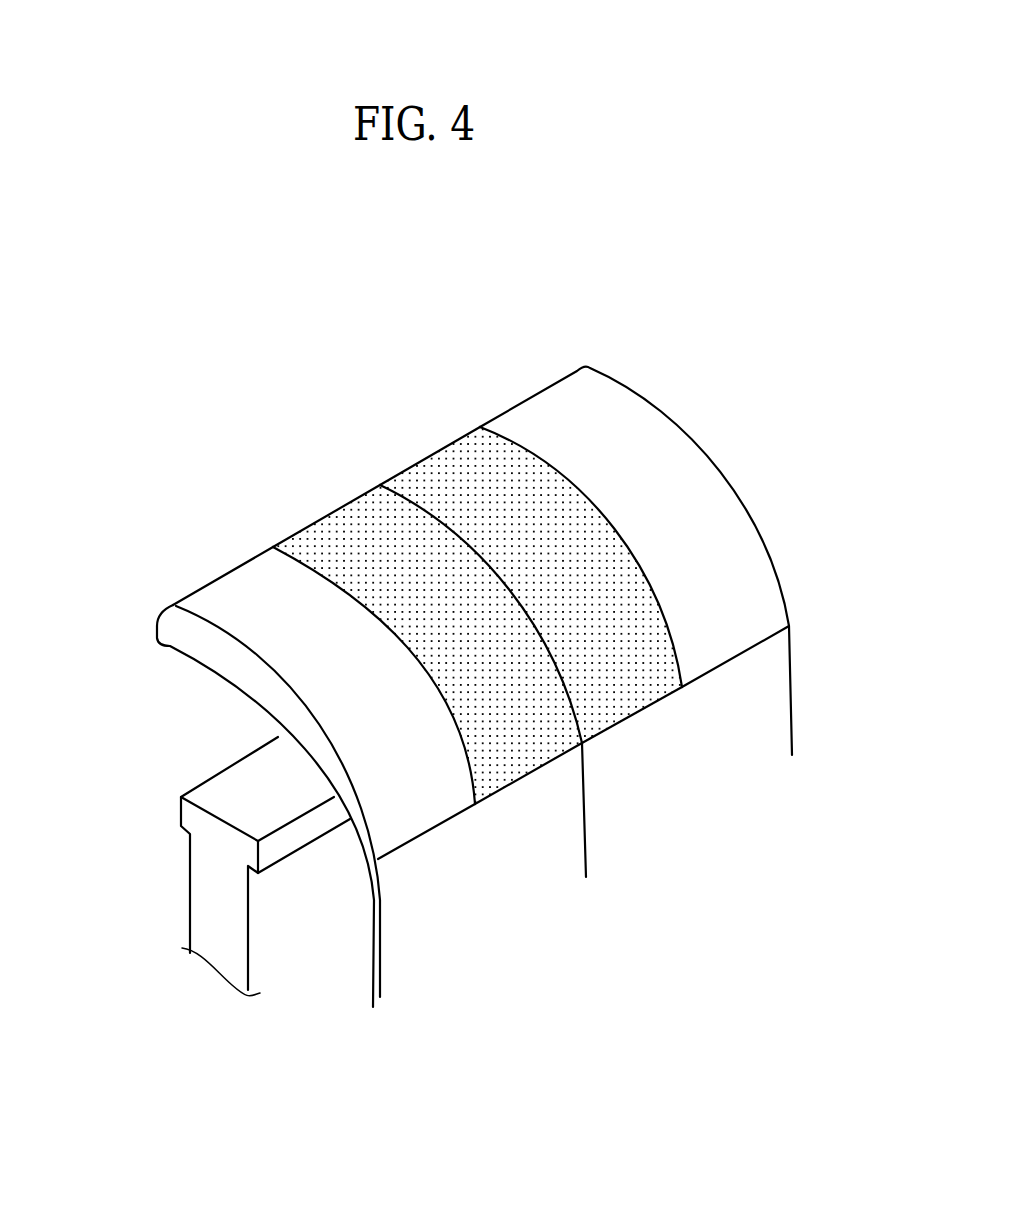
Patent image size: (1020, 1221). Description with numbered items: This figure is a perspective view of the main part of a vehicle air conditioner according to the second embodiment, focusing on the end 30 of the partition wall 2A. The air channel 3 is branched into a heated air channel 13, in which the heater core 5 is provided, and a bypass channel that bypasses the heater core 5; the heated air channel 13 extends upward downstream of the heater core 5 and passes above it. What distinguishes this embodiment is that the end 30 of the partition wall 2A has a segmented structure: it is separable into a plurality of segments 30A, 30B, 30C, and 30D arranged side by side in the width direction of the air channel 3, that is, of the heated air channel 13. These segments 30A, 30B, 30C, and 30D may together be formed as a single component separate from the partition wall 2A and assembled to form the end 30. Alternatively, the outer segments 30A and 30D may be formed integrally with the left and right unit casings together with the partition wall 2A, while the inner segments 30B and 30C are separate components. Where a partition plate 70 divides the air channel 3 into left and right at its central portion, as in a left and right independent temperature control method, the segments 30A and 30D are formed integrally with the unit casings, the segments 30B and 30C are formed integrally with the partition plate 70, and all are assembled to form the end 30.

The air channel 3 is at (88, 623).
The heater core 5 is at (204, 905).
The heated air channel 13 is at (197, 722).
The end of the partition wall 30 is at (722, 415).
The segment 30A is at (247, 583).
The segment 30B is at (330, 533).
The segment 30C is at (443, 468).
The segment 30D is at (556, 404).
The partition wall 2A is at (770, 713).
The partition plate 70 is at (585, 816).